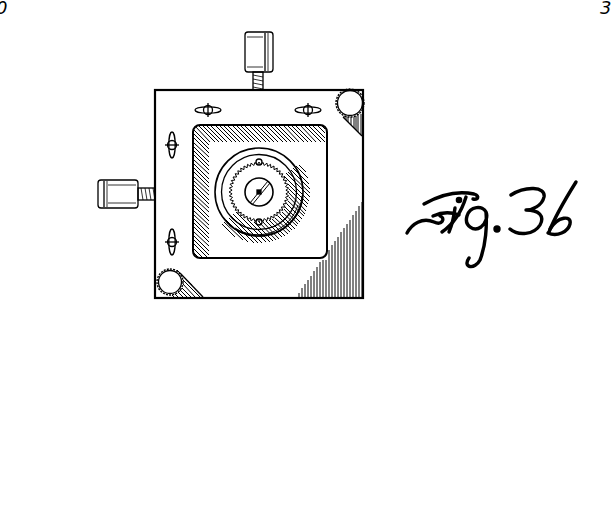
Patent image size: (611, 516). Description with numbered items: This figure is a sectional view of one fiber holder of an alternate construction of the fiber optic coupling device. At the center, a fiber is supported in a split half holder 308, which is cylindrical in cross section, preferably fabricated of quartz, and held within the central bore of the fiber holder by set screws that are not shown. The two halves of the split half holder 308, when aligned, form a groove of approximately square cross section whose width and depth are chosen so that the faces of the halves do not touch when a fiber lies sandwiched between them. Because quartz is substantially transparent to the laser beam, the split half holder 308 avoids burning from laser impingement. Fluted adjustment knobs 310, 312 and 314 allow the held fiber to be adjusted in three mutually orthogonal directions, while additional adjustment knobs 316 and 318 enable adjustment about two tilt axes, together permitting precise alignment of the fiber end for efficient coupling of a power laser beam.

The split half holder 308 is at (263, 183).
The fluted adjustment knob 310 is at (112, 181).
The fluted adjustment knob 312 is at (248, 52).
The fluted adjustment knob 314 is at (250, 212).
The adjustment knob 316 is at (350, 91).
The adjustment knob 318 is at (162, 282).